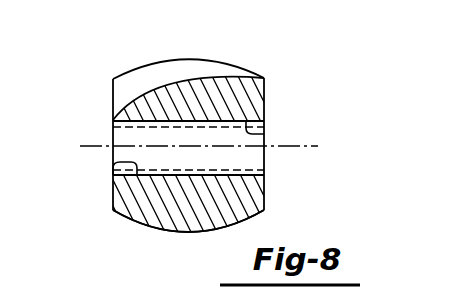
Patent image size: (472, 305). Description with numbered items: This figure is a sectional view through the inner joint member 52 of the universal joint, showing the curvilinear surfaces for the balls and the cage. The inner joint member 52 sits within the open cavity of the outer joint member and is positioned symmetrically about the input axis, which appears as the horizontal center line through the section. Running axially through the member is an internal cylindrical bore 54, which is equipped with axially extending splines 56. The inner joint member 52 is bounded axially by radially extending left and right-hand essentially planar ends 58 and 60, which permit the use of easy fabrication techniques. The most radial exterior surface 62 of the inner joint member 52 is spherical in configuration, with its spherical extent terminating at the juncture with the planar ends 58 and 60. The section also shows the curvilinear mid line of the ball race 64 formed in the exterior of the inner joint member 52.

The inner joint member 52 is at (268, 96).
The internal cylindrical bore 54 is at (113, 163).
The axially extending splines 56 is at (265, 132).
The left-hand planar end 58 is at (113, 192).
The right-hand planar end 60 is at (266, 195).
The exterior spherical surface 62 is at (143, 225).
The ball race 64 is at (176, 82).